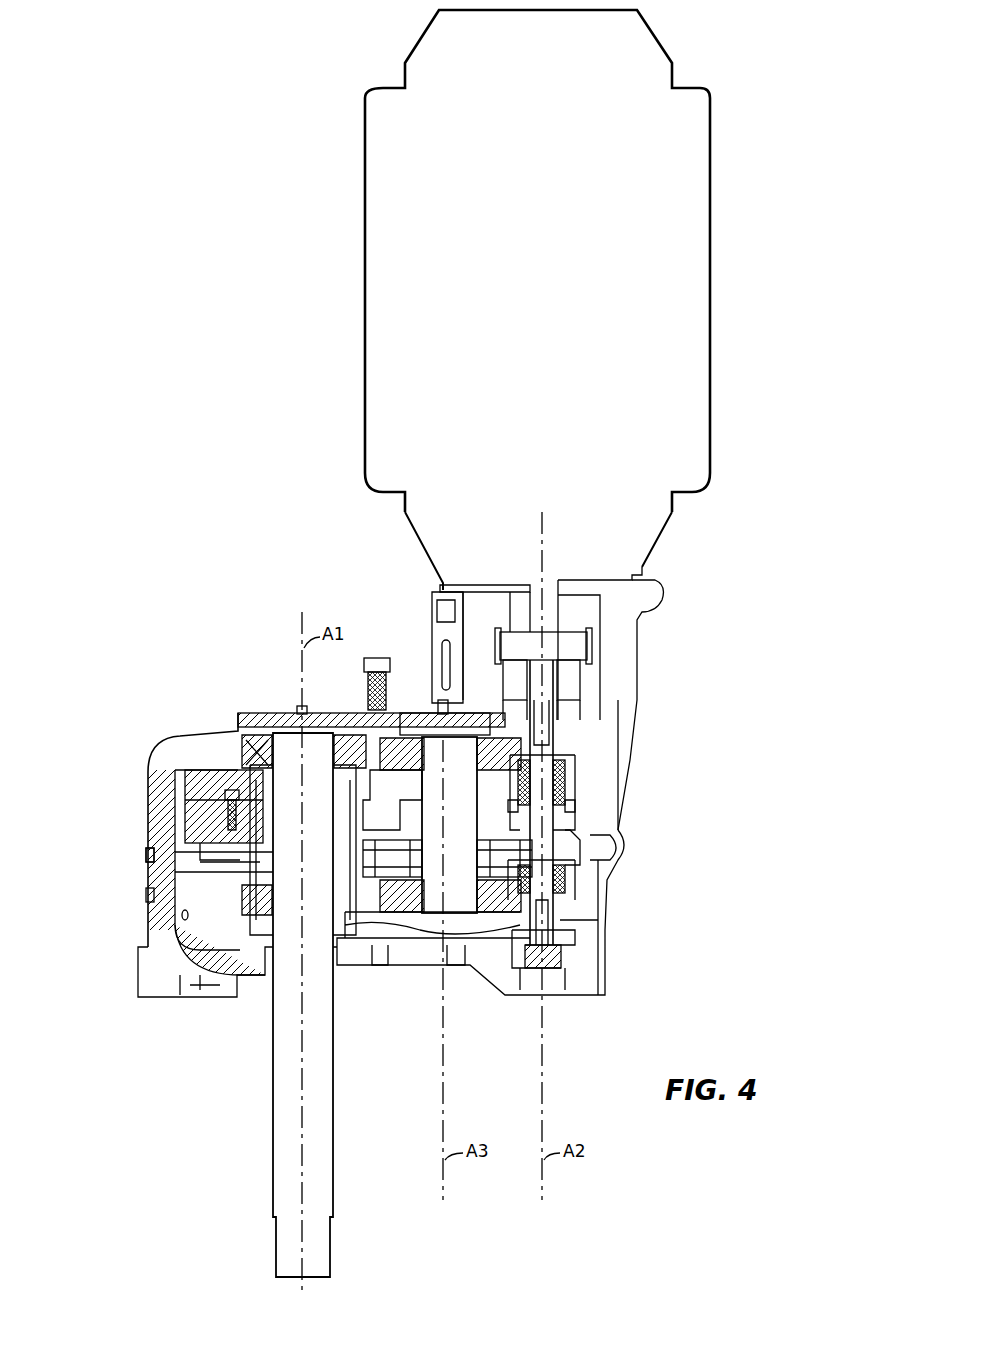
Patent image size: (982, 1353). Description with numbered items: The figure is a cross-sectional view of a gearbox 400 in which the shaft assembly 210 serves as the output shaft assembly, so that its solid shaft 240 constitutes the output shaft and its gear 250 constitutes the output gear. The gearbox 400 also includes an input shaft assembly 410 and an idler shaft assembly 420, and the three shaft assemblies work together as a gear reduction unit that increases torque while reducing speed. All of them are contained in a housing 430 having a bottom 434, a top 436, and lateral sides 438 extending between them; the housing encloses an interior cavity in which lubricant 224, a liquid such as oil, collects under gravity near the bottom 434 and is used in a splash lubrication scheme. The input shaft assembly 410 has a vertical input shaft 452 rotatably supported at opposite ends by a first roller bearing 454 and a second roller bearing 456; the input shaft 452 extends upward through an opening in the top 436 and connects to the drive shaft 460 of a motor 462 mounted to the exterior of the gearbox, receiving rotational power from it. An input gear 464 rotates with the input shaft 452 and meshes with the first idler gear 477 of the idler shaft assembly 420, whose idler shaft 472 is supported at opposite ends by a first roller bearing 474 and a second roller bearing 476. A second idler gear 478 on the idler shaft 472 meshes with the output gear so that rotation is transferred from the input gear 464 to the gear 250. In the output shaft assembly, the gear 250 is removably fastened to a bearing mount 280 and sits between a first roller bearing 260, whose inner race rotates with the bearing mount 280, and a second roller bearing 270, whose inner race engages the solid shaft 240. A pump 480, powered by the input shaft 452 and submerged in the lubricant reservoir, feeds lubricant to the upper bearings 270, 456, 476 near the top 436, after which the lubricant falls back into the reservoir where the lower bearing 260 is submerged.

The gearbox 400 is at (180, 632).
The input shaft assembly 410 is at (584, 790).
The idler shaft assembly 420 is at (463, 925).
The housing 430 is at (170, 737).
The bottom 434 is at (200, 955).
The top 436 is at (226, 730).
The lateral sides 438 is at (158, 856).
The input shaft 452 is at (553, 750).
The first roller bearing 454 is at (570, 890).
The second roller bearing 456 is at (575, 810).
The drive shaft 460 is at (548, 611).
The motor 462 is at (730, 255).
The input gear 464 is at (555, 847).
The idler shaft 472 is at (432, 958).
The first roller bearing 474 is at (392, 958).
The second roller bearing 476 is at (336, 718).
The first idler gear 477 is at (522, 985).
The second idler gear 478 is at (410, 730).
The pump 480 is at (562, 925).
The shaft assembly 210 is at (232, 880).
The lubricant 224 is at (180, 860).
The solid shaft 240 is at (335, 1160).
The gear 250 is at (188, 810).
The first roller bearing 260 is at (248, 955).
The second roller bearing 270 is at (260, 730).
The bearing mount 280 is at (247, 863).